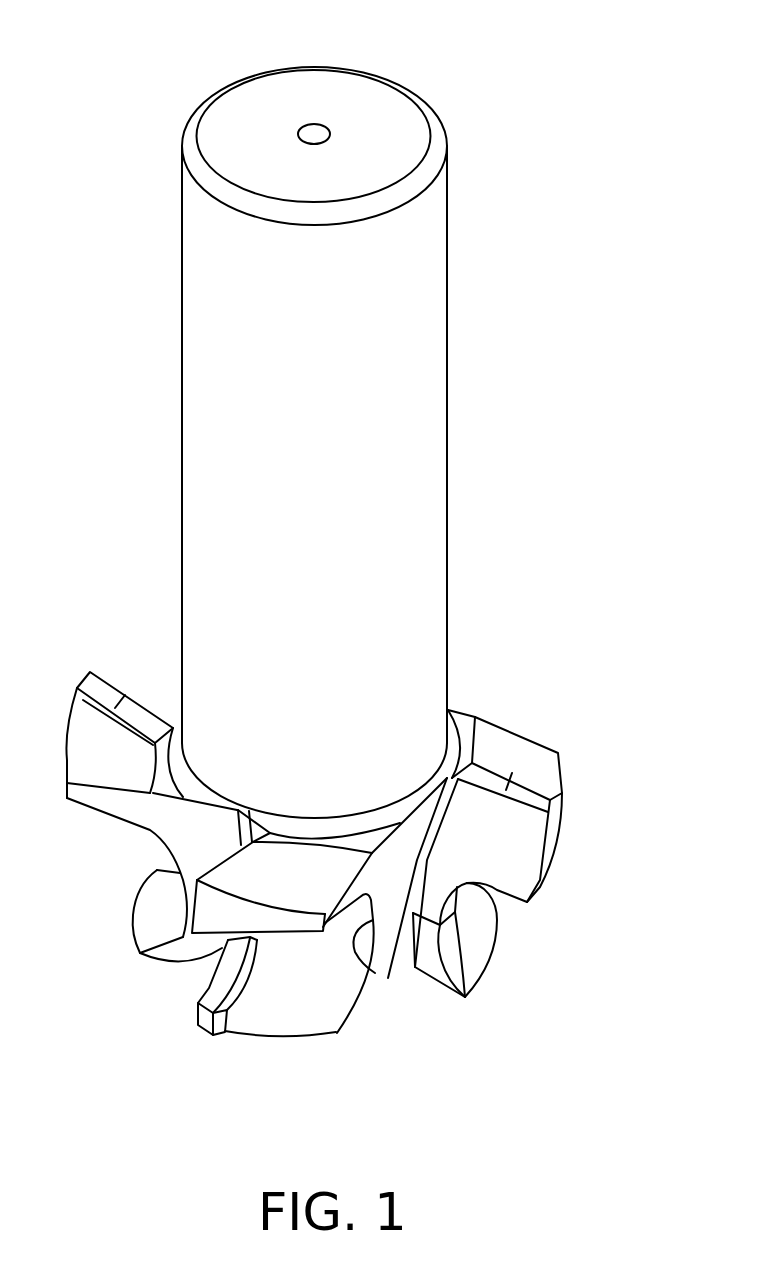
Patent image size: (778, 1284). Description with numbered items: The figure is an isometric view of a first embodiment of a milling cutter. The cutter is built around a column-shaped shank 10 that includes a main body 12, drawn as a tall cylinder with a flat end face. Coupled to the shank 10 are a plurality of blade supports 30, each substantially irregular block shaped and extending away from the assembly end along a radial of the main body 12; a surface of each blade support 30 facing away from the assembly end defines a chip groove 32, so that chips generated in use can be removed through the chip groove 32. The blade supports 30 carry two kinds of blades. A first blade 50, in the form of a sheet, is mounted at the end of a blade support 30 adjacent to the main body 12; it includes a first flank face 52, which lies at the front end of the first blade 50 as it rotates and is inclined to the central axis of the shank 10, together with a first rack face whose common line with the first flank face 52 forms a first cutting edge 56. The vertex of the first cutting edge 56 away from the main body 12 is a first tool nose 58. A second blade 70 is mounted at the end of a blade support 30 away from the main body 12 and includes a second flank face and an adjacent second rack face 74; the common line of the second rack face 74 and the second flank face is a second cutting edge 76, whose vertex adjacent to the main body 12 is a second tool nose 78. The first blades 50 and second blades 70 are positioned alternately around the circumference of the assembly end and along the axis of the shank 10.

The shank 10 is at (383, 58).
The main body 12 is at (400, 113).
The blade support 30 is at (362, 990).
The chip groove 32 is at (313, 1002).
The first blade 50 is at (540, 870).
The first flank face 52 is at (513, 886).
The first cutting edge 56 is at (497, 893).
The first tool nose 58 is at (446, 986).
The second blade 70 is at (210, 1027).
The second rack face 74 is at (212, 1000).
The second cutting edge 76 is at (207, 988).
The second tool nose 78 is at (215, 975).